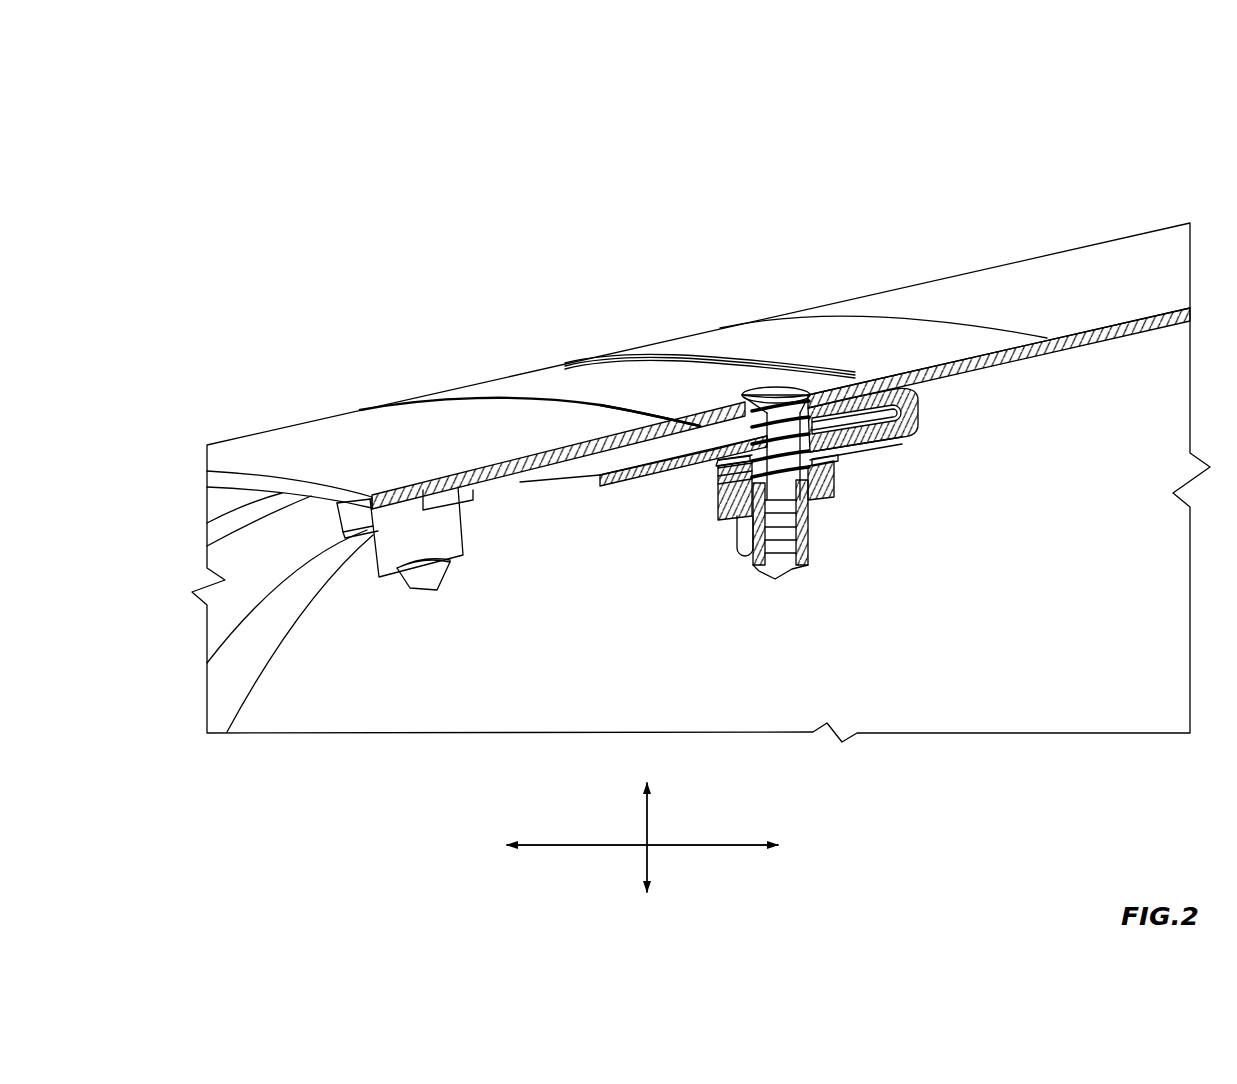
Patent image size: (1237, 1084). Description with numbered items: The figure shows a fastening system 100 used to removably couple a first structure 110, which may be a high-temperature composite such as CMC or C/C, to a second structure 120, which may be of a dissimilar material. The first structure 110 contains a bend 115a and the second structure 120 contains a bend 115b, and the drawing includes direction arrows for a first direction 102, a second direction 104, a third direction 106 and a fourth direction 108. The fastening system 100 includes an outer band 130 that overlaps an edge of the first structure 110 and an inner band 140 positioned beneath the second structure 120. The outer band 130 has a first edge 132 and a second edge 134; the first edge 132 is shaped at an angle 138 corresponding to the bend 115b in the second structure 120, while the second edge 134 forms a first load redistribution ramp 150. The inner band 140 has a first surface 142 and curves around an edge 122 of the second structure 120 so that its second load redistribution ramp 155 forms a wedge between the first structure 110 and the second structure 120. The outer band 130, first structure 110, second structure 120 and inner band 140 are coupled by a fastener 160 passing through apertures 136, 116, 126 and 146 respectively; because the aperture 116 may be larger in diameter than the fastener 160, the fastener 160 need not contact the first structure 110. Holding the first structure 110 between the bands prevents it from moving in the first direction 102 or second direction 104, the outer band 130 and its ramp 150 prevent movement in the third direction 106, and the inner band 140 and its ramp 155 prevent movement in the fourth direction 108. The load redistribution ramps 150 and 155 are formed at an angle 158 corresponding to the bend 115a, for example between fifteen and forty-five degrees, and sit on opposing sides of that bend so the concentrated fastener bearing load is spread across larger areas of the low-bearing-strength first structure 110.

The fastening system 100 is at (313, 122).
The first direction 102 is at (653, 822).
The second direction 104 is at (648, 856).
The third direction 106 is at (619, 850).
The fourth direction 108 is at (671, 850).
The first structure 110 is at (1097, 287).
The bend 115a is at (856, 375).
The bend 115b is at (683, 447).
The aperture 116 is at (720, 470).
The second structure 120 is at (343, 445).
The edge 122 is at (860, 434).
The aperture 126 is at (728, 478).
The outer band 130 is at (550, 382).
The first edge 132 is at (685, 405).
The second edge 134 is at (796, 378).
The aperture 136 is at (718, 464).
The angle 138 is at (695, 428).
The inner band 140 is at (852, 452).
The first surface 142 is at (920, 402).
The aperture 146 is at (738, 482).
The first load redistribution ramp 150 is at (857, 378).
The second load redistribution ramp 155 is at (862, 377).
The angle 158 is at (907, 434).
The fastener 160 is at (768, 387).